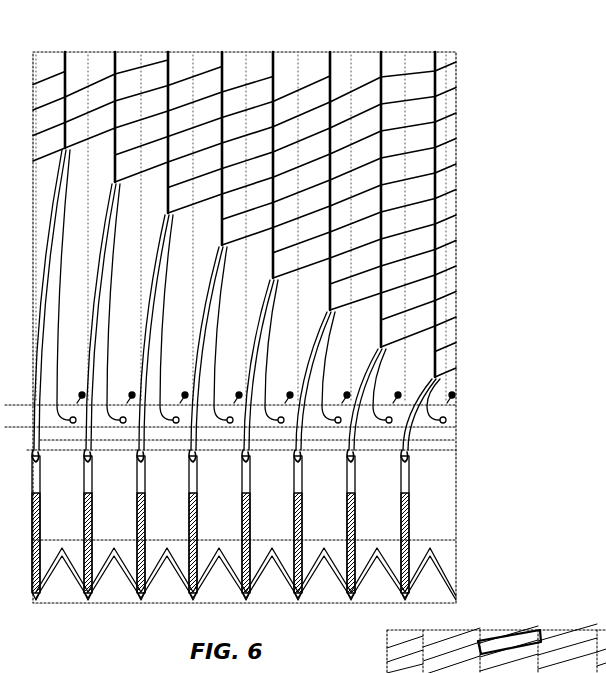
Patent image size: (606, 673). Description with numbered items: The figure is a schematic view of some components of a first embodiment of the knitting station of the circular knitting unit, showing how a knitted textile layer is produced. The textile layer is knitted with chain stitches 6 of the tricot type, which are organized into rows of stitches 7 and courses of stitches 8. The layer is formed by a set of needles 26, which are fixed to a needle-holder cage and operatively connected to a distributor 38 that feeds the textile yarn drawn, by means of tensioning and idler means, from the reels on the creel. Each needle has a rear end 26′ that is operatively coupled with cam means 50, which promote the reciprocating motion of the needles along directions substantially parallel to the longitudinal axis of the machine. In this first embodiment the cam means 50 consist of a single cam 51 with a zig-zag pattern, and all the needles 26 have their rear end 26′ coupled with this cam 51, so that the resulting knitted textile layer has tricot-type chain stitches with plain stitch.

The chain stitch 6 is at (406, 270).
The row of stitches 7 is at (284, 257).
The course of stitches 8 is at (330, 44).
The needle 26 is at (273, 563).
The rear end of needle 26′ is at (400, 597).
The distributor 38 is at (441, 438).
The cam means 50 is at (289, 581).
The cam 51 is at (107, 588).